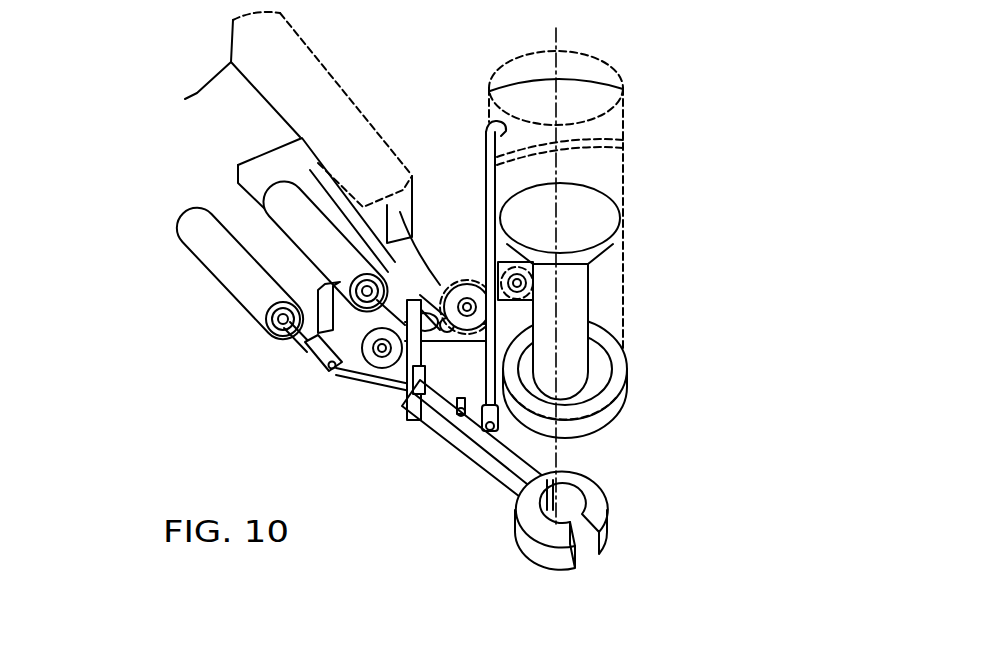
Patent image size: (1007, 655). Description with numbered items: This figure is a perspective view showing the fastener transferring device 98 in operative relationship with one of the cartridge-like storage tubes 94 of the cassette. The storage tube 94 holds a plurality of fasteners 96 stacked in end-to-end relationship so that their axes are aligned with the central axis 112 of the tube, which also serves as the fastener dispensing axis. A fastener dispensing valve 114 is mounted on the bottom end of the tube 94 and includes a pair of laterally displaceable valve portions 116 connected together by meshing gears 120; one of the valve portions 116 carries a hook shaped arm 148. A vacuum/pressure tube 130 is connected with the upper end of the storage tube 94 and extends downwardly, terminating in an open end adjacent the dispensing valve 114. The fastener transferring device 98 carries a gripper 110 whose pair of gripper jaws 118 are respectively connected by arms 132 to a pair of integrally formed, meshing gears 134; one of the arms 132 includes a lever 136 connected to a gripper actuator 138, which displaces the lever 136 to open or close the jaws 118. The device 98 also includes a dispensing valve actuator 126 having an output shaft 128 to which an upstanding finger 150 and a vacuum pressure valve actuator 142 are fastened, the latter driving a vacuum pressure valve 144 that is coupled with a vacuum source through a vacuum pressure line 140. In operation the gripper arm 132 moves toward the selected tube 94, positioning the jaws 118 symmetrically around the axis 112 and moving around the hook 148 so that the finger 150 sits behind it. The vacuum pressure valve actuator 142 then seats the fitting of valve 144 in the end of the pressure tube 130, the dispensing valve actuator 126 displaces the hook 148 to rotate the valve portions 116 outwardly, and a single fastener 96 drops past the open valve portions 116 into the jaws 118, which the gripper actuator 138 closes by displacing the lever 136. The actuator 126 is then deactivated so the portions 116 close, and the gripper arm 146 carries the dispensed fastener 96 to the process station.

The storage tube 94 is at (626, 172).
The fastener 96 is at (595, 268).
The fastener transferring device 98 is at (166, 285).
The gripper 110 is at (628, 503).
The central axis 112 is at (623, 89).
The fastener dispensing valve 114 is at (652, 359).
The valve portion 116 is at (627, 388).
The gripper jaw 118 is at (594, 556).
The meshing gears 120 is at (494, 262).
The dispensing valve actuator 126 is at (312, 213).
The output shaft 128 is at (453, 290).
The vacuum/pressure tube 130 is at (498, 118).
The arm 132 is at (490, 468).
The meshing gears 134 is at (467, 283).
The lever 136 is at (335, 371).
The gripper actuator 138 is at (203, 240).
The vacuum pressure line 140 is at (410, 385).
The vacuum pressure valve actuator 142 is at (422, 421).
The vacuum pressure valve 144 is at (470, 437).
The gripper arm 146 is at (235, 128).
The hook shaped arm 148 is at (295, 346).
The finger 150 is at (313, 368).